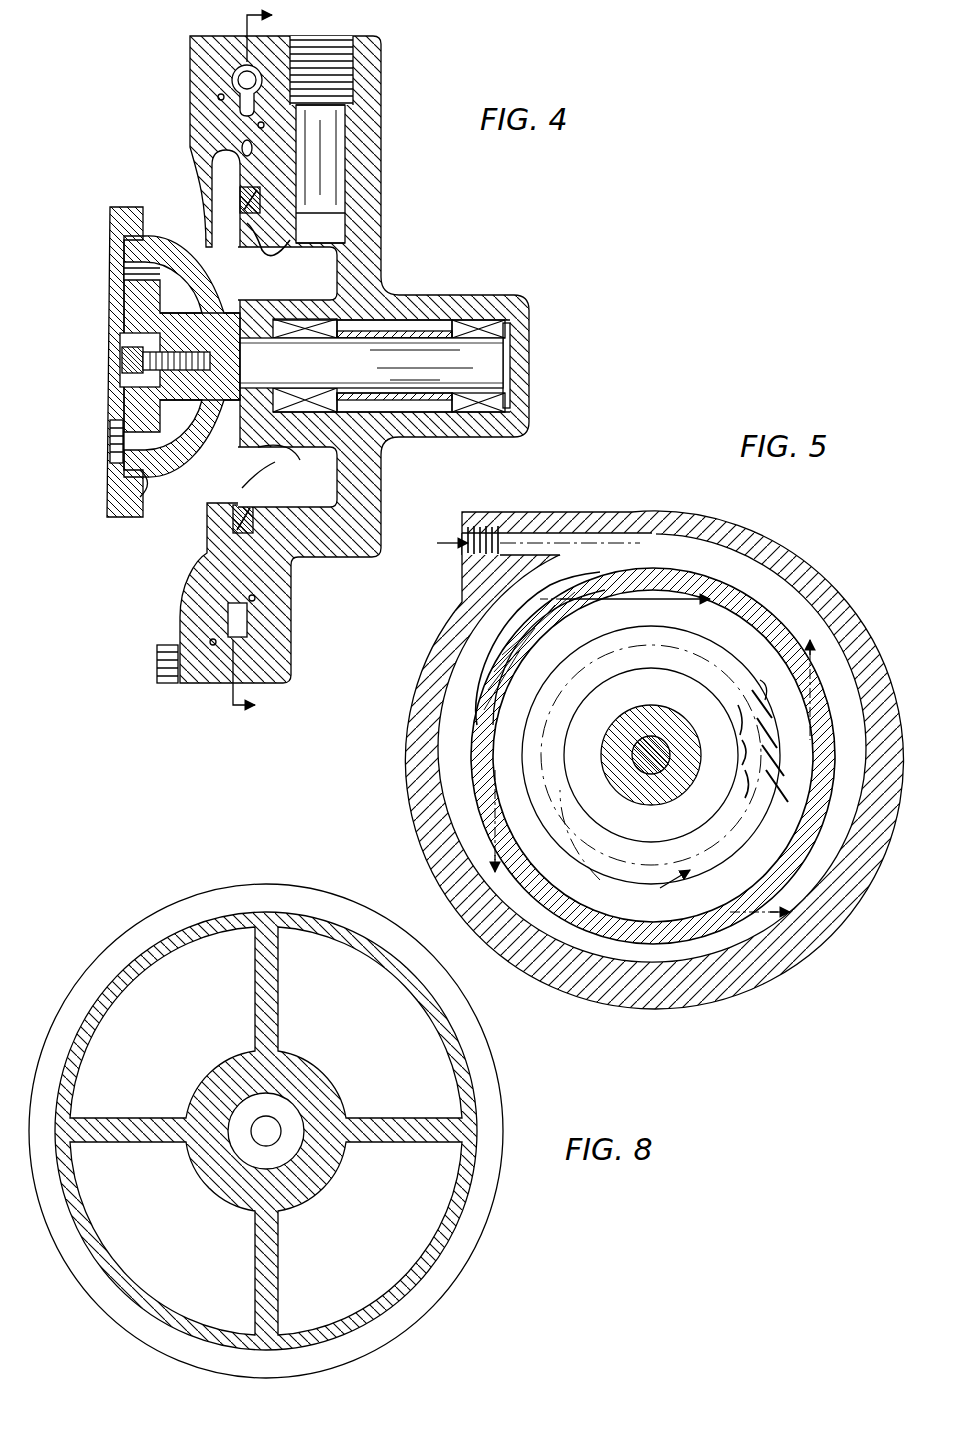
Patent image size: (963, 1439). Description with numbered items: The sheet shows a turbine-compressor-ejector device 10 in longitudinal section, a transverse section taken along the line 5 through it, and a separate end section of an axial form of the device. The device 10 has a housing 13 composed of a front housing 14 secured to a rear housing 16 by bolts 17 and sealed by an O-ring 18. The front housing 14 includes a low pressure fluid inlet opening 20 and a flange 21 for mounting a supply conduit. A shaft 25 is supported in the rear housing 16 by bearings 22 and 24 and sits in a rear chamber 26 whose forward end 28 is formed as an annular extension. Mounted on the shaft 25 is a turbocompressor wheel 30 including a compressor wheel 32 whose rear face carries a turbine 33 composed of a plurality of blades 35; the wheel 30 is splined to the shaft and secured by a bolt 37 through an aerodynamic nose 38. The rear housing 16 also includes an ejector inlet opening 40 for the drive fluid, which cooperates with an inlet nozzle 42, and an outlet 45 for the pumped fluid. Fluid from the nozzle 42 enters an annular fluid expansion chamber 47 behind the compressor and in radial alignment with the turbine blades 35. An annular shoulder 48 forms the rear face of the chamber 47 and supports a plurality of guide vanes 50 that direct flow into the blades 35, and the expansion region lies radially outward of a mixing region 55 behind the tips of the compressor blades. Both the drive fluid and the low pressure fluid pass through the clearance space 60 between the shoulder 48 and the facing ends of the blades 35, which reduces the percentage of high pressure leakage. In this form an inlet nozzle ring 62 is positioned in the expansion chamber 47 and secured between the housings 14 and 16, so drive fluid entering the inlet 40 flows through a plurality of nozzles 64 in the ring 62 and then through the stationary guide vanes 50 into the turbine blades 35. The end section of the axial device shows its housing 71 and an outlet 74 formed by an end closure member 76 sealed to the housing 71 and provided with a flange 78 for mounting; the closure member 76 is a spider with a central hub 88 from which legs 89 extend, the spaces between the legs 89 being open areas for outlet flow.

In FIG. 4, the section line 5— 5 is at (264, 360).
In FIG. 4, the turbine-compressor-ejector device 10 is at (420, 195).
In FIG. 5, the turbine-compressor-ejector device 10 is at (845, 560).
In FIG. 4, the housing 13 is at (393, 170).
In FIG. 5, the housing 13 is at (858, 620).
In FIG. 4, the front housing 14 is at (127, 207).
In FIG. 4, the rear housing 16 is at (273, 617).
In FIG. 5, the rear housing 16 is at (675, 520).
In FIG. 4, the bolts 17 is at (160, 665).
In FIG. 4, the O-ring 18 is at (210, 617).
In FIG. 4, the low pressure fluid inlet opening 20 is at (112, 445).
In FIG. 4, the flange 21 is at (112, 510).
In FIG. 4, the bearing 22 is at (485, 325).
In FIG. 4, the bearing 24 is at (305, 412).
In FIG. 4, the shaft 25 is at (485, 360).
In FIG. 5, the shaft 25 is at (630, 780).
In FIG. 4, the rear chamber 26 is at (400, 325).
In FIG. 4, the forward end 28 is at (330, 412).
In FIG. 4, the turbocompressor wheel 30 is at (170, 390).
In FIG. 5, the turbocompressor wheel 30 is at (645, 710).
In FIG. 4, the compressor wheel 32 is at (198, 287).
In FIG. 5, the turbine 33 is at (662, 878).
In FIG. 4, the turbine blades 35 is at (260, 247).
In FIG. 5, the turbine blades 35 is at (738, 758).
In FIG. 4, the bolt 37 is at (125, 360).
In FIG. 4, the aerodynamic nose 38 is at (142, 325).
In FIG. 4, the ejector inlet opening 40 is at (245, 66).
In FIG. 5, the ejector inlet opening 40 is at (463, 553).
In FIG. 4, the inlet nozzle 42 is at (237, 82).
In FIG. 5, the inlet nozzle 42 is at (520, 540).
In FIG. 4, the outlet 45 is at (345, 125).
In FIG. 4, the annular fluid expansion chamber 47 is at (258, 80).
In FIG. 5, the annular fluid expansion chamber 47 is at (690, 590).
In FIG. 4, the annular shoulder 48 is at (352, 240).
In FIG. 4, the guide vanes 50 is at (240, 200).
In FIG. 5, the guide vanes 50 is at (757, 688).
In FIG. 4, the mixing region 55 is at (330, 160).
In FIG. 4, the clearance space 60 is at (290, 240).
In FIG. 4, the inlet nozzle ring 62 is at (242, 136).
In FIG. 5, the inlet nozzle ring 62 is at (710, 600).
In FIG. 5, the nozzles 64 is at (590, 595).
In FIG. 8, the housing 71 is at (300, 920).
In FIG. 8, the outlet 74 is at (198, 1031).
In FIG. 8, the end closure member 76 is at (475, 1100).
In FIG. 8, the flange 78 is at (503, 1148).
In FIG. 8, the central hub 88 is at (318, 1102).
In FIG. 8, the legs 89 is at (275, 990).